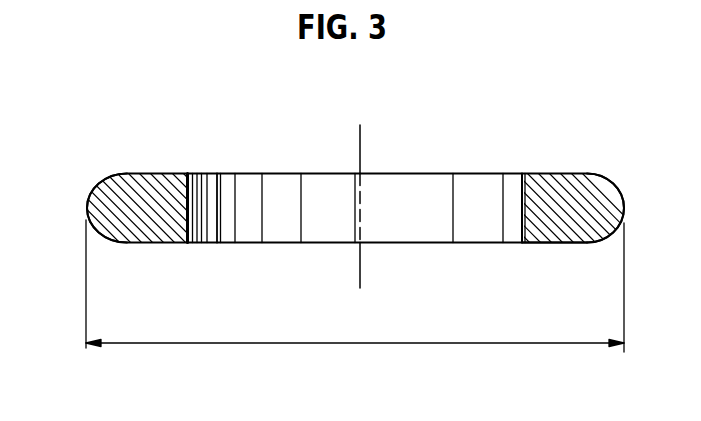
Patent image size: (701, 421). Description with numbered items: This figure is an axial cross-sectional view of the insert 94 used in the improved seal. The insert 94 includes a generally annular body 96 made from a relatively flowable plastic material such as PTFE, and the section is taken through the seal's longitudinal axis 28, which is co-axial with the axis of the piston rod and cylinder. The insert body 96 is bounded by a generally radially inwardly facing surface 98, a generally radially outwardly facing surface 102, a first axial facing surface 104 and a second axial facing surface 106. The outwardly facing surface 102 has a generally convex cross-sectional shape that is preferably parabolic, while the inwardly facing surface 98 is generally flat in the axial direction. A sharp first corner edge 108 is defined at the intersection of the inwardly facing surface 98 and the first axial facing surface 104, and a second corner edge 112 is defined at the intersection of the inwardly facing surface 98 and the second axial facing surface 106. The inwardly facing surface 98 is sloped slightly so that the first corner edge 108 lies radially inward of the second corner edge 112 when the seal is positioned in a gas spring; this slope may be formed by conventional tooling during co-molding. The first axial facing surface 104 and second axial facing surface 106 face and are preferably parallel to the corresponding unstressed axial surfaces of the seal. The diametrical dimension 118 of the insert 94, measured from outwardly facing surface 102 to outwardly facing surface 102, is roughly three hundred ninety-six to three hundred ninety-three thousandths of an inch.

The insert 94 is at (113, 85).
The annular body 96 is at (575, 197).
The radially inwardly facing surface 98 is at (198, 191).
The radially outwardly facing surface 102 is at (91, 192).
The first axial facing surface 104 is at (147, 173).
The second axial facing surface 106 is at (176, 243).
The first corner edge 108 is at (522, 173).
The second corner edge 112 is at (522, 243).
The diametrical dimension 118 is at (387, 343).
The longitudinal axis 28 is at (359, 160).